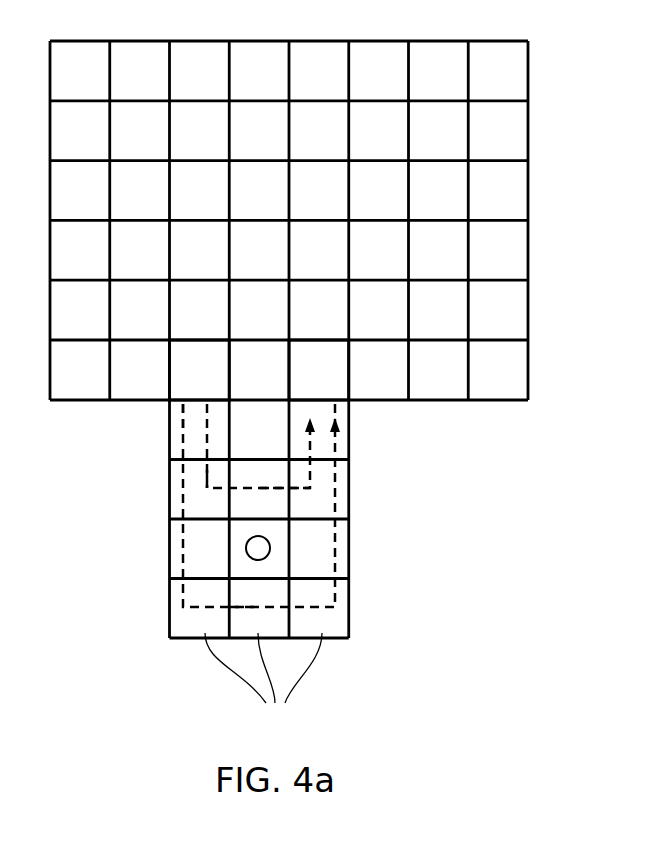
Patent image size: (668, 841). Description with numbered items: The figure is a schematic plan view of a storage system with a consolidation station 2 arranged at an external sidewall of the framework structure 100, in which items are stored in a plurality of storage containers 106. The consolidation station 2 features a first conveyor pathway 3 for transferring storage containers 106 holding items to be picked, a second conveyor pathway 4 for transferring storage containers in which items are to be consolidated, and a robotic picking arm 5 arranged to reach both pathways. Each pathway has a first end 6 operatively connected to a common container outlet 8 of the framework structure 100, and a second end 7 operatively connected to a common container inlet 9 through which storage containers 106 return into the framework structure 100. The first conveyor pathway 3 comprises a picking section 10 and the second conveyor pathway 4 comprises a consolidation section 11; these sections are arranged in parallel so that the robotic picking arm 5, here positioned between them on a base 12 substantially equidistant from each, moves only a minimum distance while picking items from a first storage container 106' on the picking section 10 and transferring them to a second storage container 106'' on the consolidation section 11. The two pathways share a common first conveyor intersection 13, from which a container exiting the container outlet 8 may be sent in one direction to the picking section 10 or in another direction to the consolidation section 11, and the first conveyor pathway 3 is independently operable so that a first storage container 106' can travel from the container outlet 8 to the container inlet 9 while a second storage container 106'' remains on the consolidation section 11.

The framework structure 100 is at (359, 220).
The storage container 106 is at (350, 220).
The first storage container 106' is at (199, 519).
The second storage container 106'' is at (263, 686).
The consolidation station 2 is at (311, 569).
The first conveyor pathway 3 is at (207, 470).
The second conveyor pathway 4 is at (183, 448).
The robotic picking arm 5 is at (350, 575).
The base 12 is at (262, 548).
The first end 6 is at (182, 409).
The second end 7 is at (336, 409).
The container outlet 8 is at (200, 370).
The container inlet 9 is at (319, 370).
The picking section 10 is at (280, 502).
The consolidation section 11 is at (240, 594).
The first conveyor intersection 13 is at (200, 499).